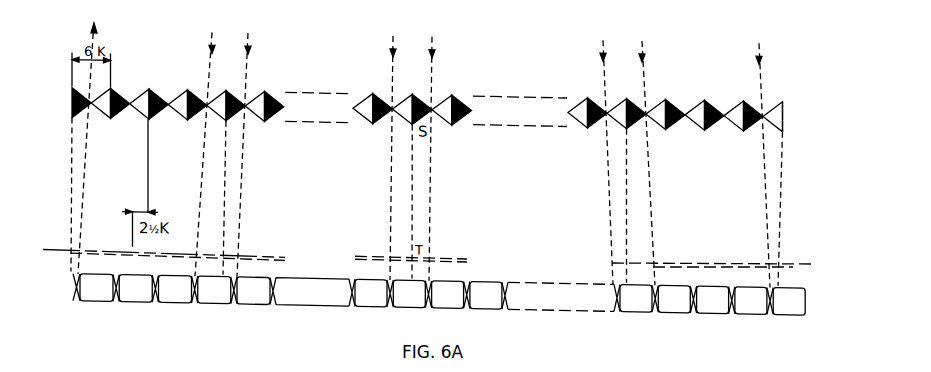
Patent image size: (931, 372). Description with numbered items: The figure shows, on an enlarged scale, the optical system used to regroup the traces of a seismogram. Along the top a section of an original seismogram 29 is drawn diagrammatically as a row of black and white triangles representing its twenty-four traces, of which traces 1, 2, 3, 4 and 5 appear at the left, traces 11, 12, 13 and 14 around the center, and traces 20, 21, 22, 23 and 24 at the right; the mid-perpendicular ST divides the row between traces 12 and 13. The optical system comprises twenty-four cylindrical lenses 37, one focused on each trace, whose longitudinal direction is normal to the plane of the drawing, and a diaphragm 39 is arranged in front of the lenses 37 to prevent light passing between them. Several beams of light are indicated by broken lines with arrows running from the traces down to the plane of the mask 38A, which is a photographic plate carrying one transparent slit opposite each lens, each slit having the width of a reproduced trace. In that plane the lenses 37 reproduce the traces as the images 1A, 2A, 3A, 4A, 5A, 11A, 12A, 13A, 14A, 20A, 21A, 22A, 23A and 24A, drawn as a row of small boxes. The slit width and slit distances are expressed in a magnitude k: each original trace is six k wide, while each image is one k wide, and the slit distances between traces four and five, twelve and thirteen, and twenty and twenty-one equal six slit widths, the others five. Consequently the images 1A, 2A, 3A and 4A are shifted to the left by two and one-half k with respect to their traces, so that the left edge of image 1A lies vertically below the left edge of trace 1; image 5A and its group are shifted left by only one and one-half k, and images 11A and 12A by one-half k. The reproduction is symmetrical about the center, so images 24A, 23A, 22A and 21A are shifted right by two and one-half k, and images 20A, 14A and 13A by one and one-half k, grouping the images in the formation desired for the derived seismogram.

The trace 1 is at (91, 109).
The trace 2 is at (130, 109).
The trace 3 is at (168, 110).
The trace 4 is at (207, 111).
The trace 5 is at (245, 112).
The trace 11 is at (363, 113).
The trace 12 is at (393, 115).
The trace 13 is at (432, 115).
The trace 14 is at (465, 116).
The trace 20 is at (607, 119).
The trace 21 is at (647, 120).
The trace 22 is at (685, 120).
The trace 23 is at (724, 121).
The trace 24 is at (763, 122).
The original seismogram 29 is at (783, 95).
The cylindrical lenses 37 is at (718, 254).
The mask 38A is at (790, 274).
The diaphragm 39 is at (797, 250).
The image of trace 1A is at (96, 288).
The image of trace 2A is at (135, 289).
The image of trace 3A is at (175, 289).
The image of trace 4A is at (214, 290).
The image of trace 5A is at (253, 291).
The image of trace 11A is at (371, 293).
The image of trace 12A is at (409, 294).
The image of trace 13A is at (448, 295).
The image of trace 14A is at (486, 296).
The image of trace 20A is at (636, 299).
The image of trace 21A is at (674, 299).
The image of trace 22A is at (713, 300).
The image of trace 23A is at (751, 301).
The image of trace 24A is at (789, 302).